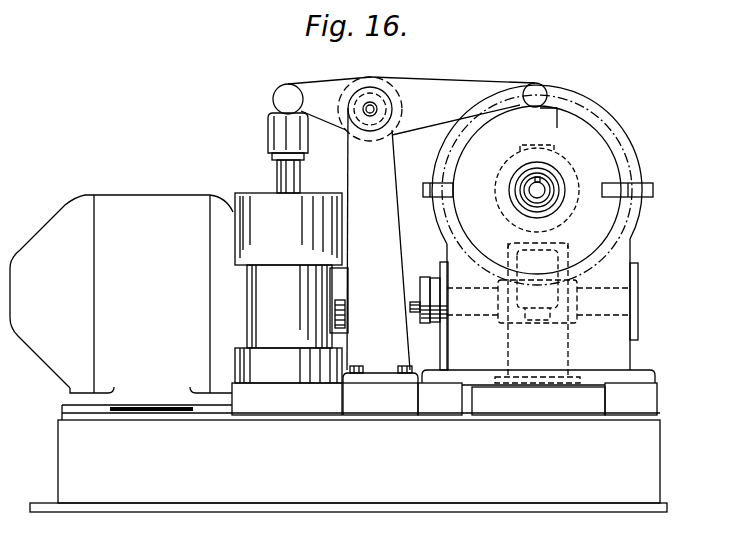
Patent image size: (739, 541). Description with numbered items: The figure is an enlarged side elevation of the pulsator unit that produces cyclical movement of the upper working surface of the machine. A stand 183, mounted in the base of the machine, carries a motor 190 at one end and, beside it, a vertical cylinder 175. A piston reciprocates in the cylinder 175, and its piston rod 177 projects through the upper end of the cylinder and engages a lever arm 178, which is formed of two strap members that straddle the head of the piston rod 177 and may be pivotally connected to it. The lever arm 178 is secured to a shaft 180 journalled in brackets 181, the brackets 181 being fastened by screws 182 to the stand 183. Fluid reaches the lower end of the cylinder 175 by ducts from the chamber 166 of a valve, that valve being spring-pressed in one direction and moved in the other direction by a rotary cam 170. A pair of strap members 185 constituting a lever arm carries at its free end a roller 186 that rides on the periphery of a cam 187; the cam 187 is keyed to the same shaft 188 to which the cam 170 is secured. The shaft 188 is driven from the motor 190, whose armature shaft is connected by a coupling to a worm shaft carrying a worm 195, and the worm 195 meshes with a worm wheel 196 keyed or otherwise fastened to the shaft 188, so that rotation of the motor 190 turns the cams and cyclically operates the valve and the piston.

The valve chamber 166 is at (558, 276).
The rotary cam 170 is at (580, 213).
The cylinder 175 is at (276, 303).
The piston rod 177 is at (280, 133).
The lever arm 178 is at (326, 92).
The shaft 180 is at (383, 96).
The brackets 181 is at (388, 248).
The screws 182 is at (407, 366).
The stand 183 is at (383, 505).
The strap members 185 is at (450, 98).
The roller 186 is at (540, 85).
The cam 187 is at (485, 243).
The shaft 188 is at (535, 188).
The motor 190 is at (125, 212).
The worm 195 is at (502, 325).
The worm wheel 196 is at (450, 214).